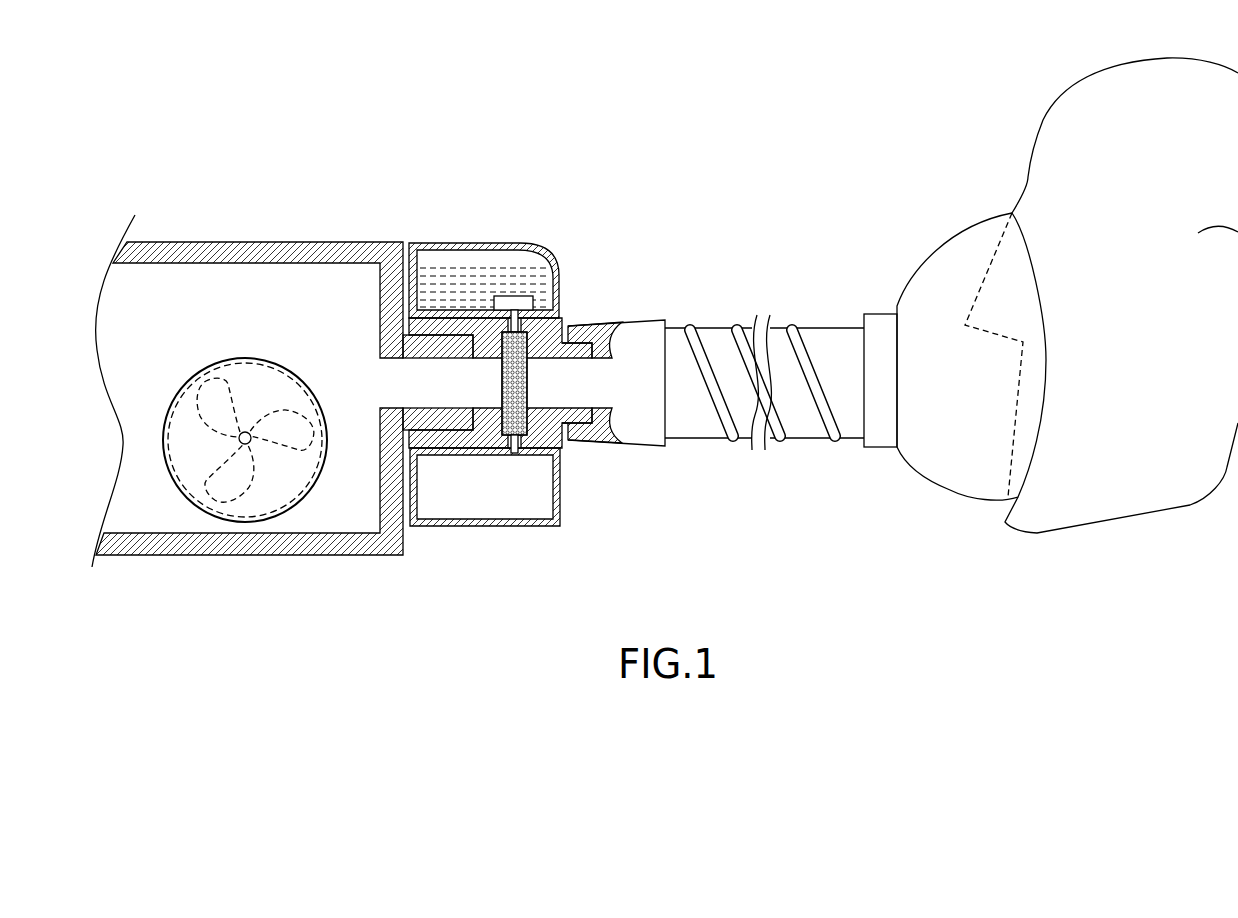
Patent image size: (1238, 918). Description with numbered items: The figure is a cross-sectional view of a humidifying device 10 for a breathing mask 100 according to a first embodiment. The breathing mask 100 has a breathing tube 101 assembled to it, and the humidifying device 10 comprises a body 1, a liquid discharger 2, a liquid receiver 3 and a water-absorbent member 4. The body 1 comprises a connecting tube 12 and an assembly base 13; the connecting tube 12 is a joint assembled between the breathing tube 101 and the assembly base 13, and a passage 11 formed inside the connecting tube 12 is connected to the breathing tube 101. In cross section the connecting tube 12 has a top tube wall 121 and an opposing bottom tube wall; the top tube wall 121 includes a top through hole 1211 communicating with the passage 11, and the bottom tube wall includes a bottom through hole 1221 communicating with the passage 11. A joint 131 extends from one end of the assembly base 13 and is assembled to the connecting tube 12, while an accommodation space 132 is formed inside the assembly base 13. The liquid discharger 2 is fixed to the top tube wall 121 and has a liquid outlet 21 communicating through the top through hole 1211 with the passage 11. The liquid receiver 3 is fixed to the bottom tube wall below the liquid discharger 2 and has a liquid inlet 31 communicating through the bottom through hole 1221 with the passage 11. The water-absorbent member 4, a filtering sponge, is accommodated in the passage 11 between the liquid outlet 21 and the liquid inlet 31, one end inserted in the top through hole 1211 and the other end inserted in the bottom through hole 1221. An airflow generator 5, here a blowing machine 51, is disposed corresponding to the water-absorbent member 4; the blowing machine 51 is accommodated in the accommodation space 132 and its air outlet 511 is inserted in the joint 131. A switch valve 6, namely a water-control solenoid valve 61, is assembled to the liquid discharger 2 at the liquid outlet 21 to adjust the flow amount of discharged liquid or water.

The humidifying device 10 is at (272, 130).
The body 1 is at (328, 117).
The assembly base 13 is at (333, 240).
The accommodation space 132 is at (262, 282).
The joint 131 is at (443, 420).
The air outlet 511 is at (392, 388).
The airflow generator 5 is at (187, 380).
The blowing machine 51 is at (247, 382).
The connecting tube 12 is at (433, 310).
The passage 11 is at (552, 388).
The top tube wall 121 is at (575, 327).
The top through hole 1211 is at (518, 327).
The bottom through hole 1221 is at (523, 445).
The liquid discharger 2 is at (457, 237).
The switch valve 6 is at (495, 290).
The water-control solenoid valve 61 is at (505, 302).
The liquid outlet 21 is at (515, 313).
The water-absorbent member 4 is at (522, 375).
The liquid receiver 3 is at (475, 530).
The liquid inlet 31 is at (510, 455).
The breathing tube 101 is at (713, 337).
The breathing mask 100 is at (943, 274).